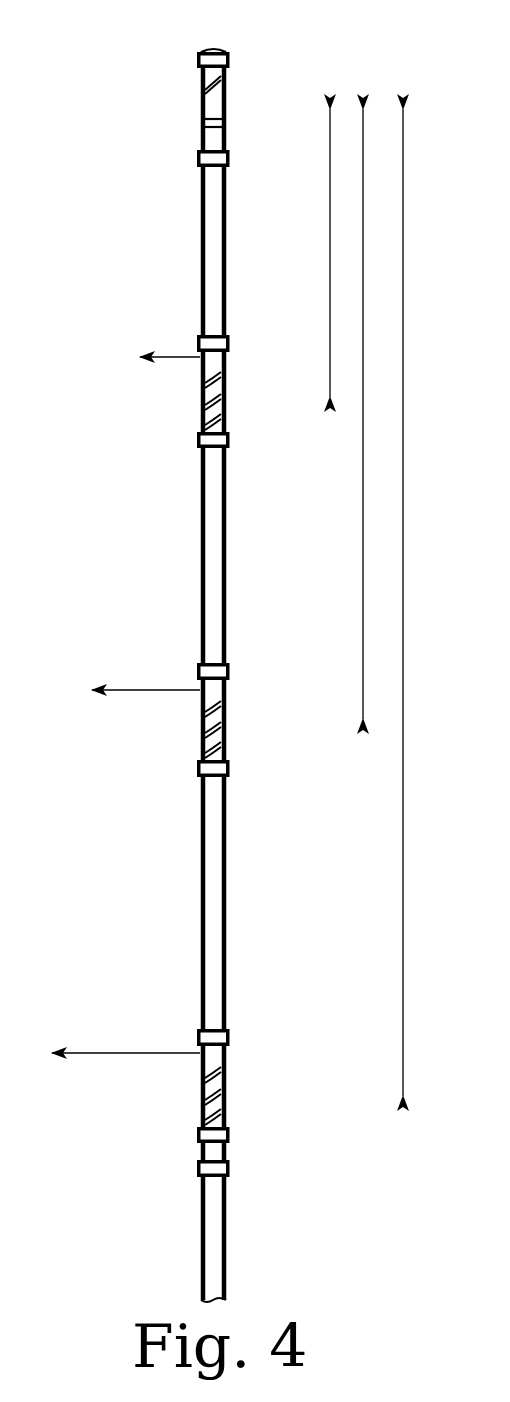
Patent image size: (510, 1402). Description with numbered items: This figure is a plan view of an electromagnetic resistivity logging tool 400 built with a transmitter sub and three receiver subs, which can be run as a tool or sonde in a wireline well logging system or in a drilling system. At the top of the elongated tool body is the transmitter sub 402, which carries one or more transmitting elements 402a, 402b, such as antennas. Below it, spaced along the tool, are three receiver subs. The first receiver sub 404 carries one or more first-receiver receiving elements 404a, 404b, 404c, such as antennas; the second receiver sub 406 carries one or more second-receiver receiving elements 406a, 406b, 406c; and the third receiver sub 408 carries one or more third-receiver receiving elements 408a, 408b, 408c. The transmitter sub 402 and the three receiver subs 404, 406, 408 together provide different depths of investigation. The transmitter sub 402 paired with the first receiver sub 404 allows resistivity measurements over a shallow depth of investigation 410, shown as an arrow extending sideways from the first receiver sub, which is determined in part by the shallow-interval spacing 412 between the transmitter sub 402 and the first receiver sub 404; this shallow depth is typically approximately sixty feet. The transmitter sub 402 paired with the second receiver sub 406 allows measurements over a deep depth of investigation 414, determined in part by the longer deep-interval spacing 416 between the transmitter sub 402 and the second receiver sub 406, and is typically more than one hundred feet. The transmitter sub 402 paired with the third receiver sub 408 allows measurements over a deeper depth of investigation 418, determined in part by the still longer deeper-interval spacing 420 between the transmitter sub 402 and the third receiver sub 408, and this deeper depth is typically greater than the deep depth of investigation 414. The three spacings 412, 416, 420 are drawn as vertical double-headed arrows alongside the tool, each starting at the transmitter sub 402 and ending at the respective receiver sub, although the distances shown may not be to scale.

The electromagnetic resistivity logging tool 400 is at (300, 52).
The transmitter sub 402 is at (207, 110).
The transmitting element 402a is at (202, 91).
The transmitting element 402b is at (202, 142).
The first receiver sub 404 is at (206, 392).
The first-receiver receiving element 404a is at (205, 381).
The first-receiver receiving element 404b is at (205, 403).
The first-receiver receiving element 404c is at (205, 422).
The second receiver sub 406 is at (205, 720).
The second-receiver receiving element 406a is at (205, 710).
The second-receiver receiving element 406b is at (205, 731).
The second-receiver receiving element 406c is at (205, 751).
The third receiver sub 408 is at (206, 1103).
The third-receiver receiving element 408a is at (205, 1076).
The third-receiver receiving element 408b is at (205, 1098).
The third-receiver receiving element 408c is at (205, 1118).
The shallow depth of investigation 410 is at (182, 355).
The shallow-interval spacing 412 is at (329, 243).
The deep depth of investigation 414 is at (160, 688).
The deep-interval spacing 416 is at (362, 565).
The deeper depth of investigation 418 is at (162, 1051).
The deeper-interval spacing 420 is at (402, 882).